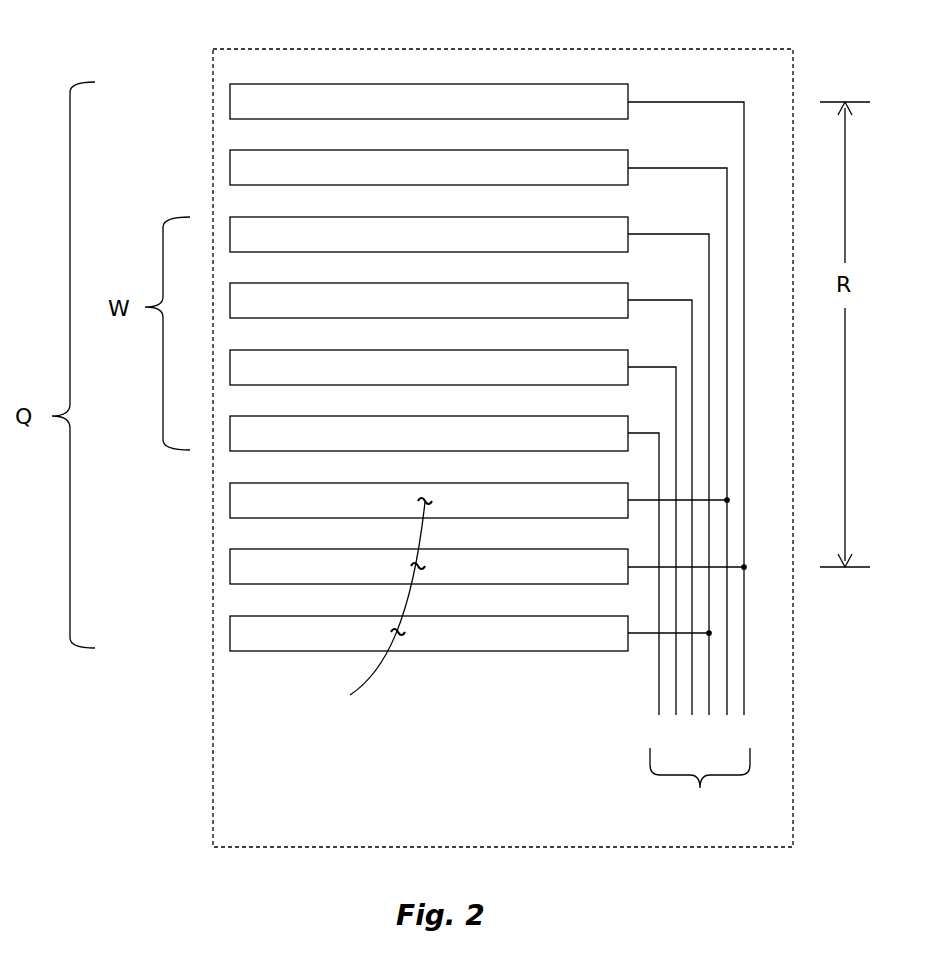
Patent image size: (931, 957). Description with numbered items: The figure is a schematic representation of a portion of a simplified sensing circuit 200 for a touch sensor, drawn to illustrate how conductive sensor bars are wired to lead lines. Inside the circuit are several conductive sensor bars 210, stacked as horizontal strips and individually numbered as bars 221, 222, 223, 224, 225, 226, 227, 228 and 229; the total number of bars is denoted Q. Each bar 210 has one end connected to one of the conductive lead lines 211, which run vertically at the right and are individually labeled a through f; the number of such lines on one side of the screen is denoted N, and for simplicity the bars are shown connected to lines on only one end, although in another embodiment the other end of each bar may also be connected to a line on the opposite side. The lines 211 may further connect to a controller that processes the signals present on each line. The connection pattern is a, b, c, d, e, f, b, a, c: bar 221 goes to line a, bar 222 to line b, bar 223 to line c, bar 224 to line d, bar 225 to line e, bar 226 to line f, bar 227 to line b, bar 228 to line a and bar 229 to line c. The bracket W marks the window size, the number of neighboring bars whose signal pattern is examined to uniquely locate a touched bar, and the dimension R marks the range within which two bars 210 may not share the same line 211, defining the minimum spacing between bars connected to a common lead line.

The sensing circuit 200 is at (388, 30).
The conductive sensor bars 210 is at (370, 605).
The conductive lead lines 211 is at (626, 685).
The sensor bar 221 is at (429, 101).
The sensor bar 222 is at (429, 167).
The sensor bar 223 is at (429, 234).
The sensor bar 224 is at (429, 300).
The sensor bar 225 is at (429, 367).
The sensor bar 226 is at (429, 433).
The sensor bar 227 is at (429, 500).
The sensor bar 228 is at (429, 566).
The sensor bar 229 is at (429, 633).